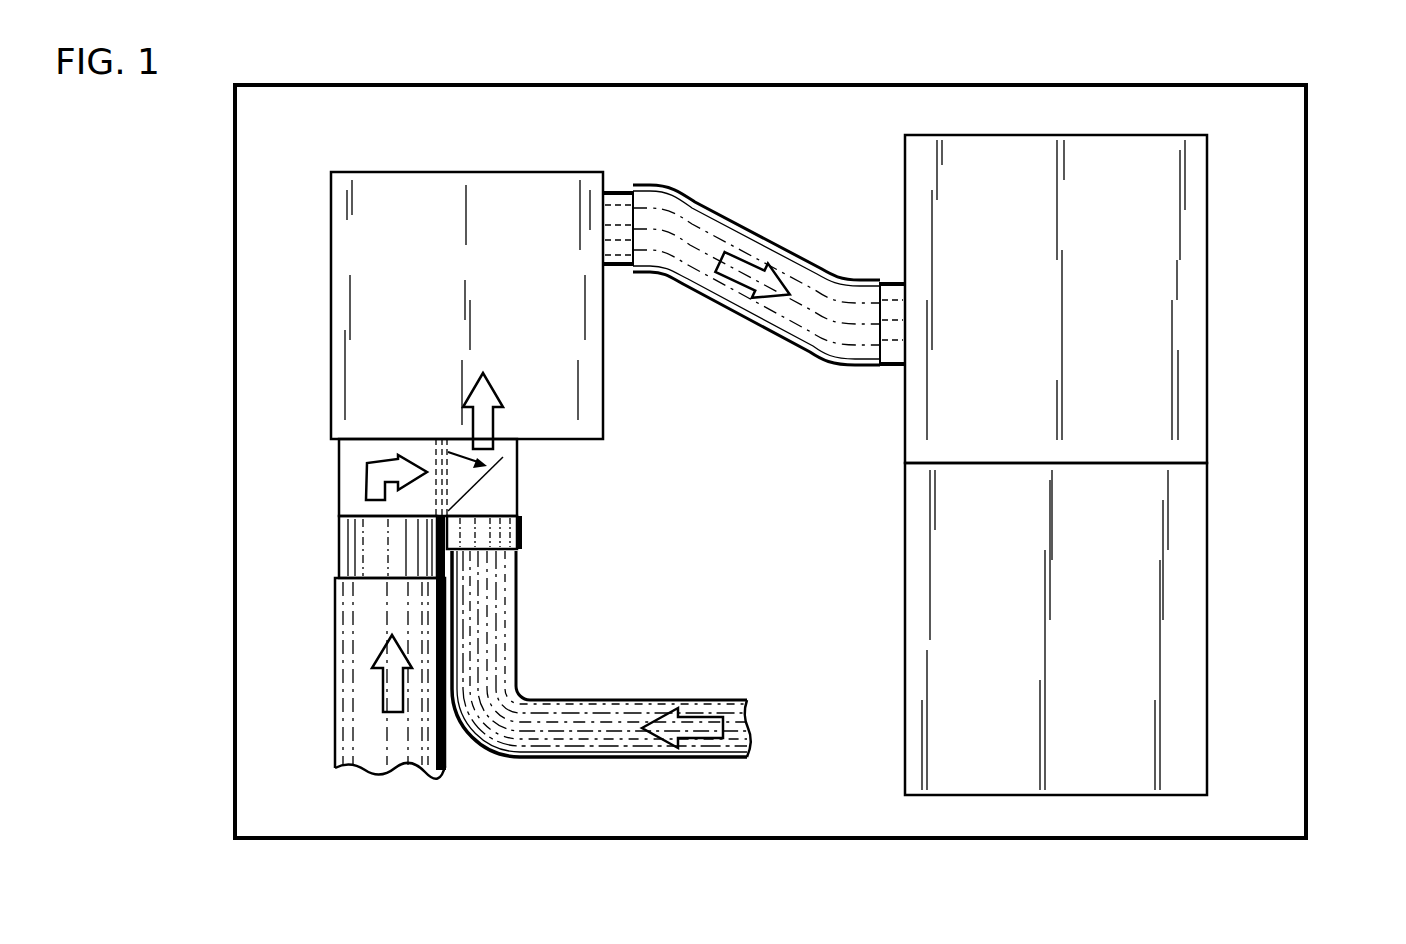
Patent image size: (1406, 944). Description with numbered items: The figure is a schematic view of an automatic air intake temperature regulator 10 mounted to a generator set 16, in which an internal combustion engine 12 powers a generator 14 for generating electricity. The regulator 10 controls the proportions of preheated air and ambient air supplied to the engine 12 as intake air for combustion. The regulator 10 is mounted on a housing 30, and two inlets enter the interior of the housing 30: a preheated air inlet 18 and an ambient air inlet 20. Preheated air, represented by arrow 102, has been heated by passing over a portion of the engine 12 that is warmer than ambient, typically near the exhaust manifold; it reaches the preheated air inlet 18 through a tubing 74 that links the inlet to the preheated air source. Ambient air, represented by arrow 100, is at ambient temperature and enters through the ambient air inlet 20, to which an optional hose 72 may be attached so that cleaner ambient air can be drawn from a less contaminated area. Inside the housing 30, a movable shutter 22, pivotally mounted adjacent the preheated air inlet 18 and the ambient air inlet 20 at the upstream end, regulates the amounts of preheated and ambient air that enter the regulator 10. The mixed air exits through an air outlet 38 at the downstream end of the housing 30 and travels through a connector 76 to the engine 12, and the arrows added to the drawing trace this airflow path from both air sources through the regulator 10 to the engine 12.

The automatic air intake temperature regulator 10 is at (556, 493).
The internal combustion engine 12 is at (1170, 135).
The generator 14 is at (905, 538).
The generator set 16 is at (1308, 103).
The preheated air inlet 18 is at (522, 532).
The ambient air inlet 20 is at (338, 545).
The shutter 22 is at (402, 437).
The housing 30 is at (326, 372).
The air outlet 38 is at (652, 190).
The hose 72 is at (335, 650).
The tubing 74 is at (647, 698).
The connector 76 is at (730, 210).
The arrow representing ambient air 100 is at (378, 705).
The arrow representing preheated air 102 is at (700, 737).